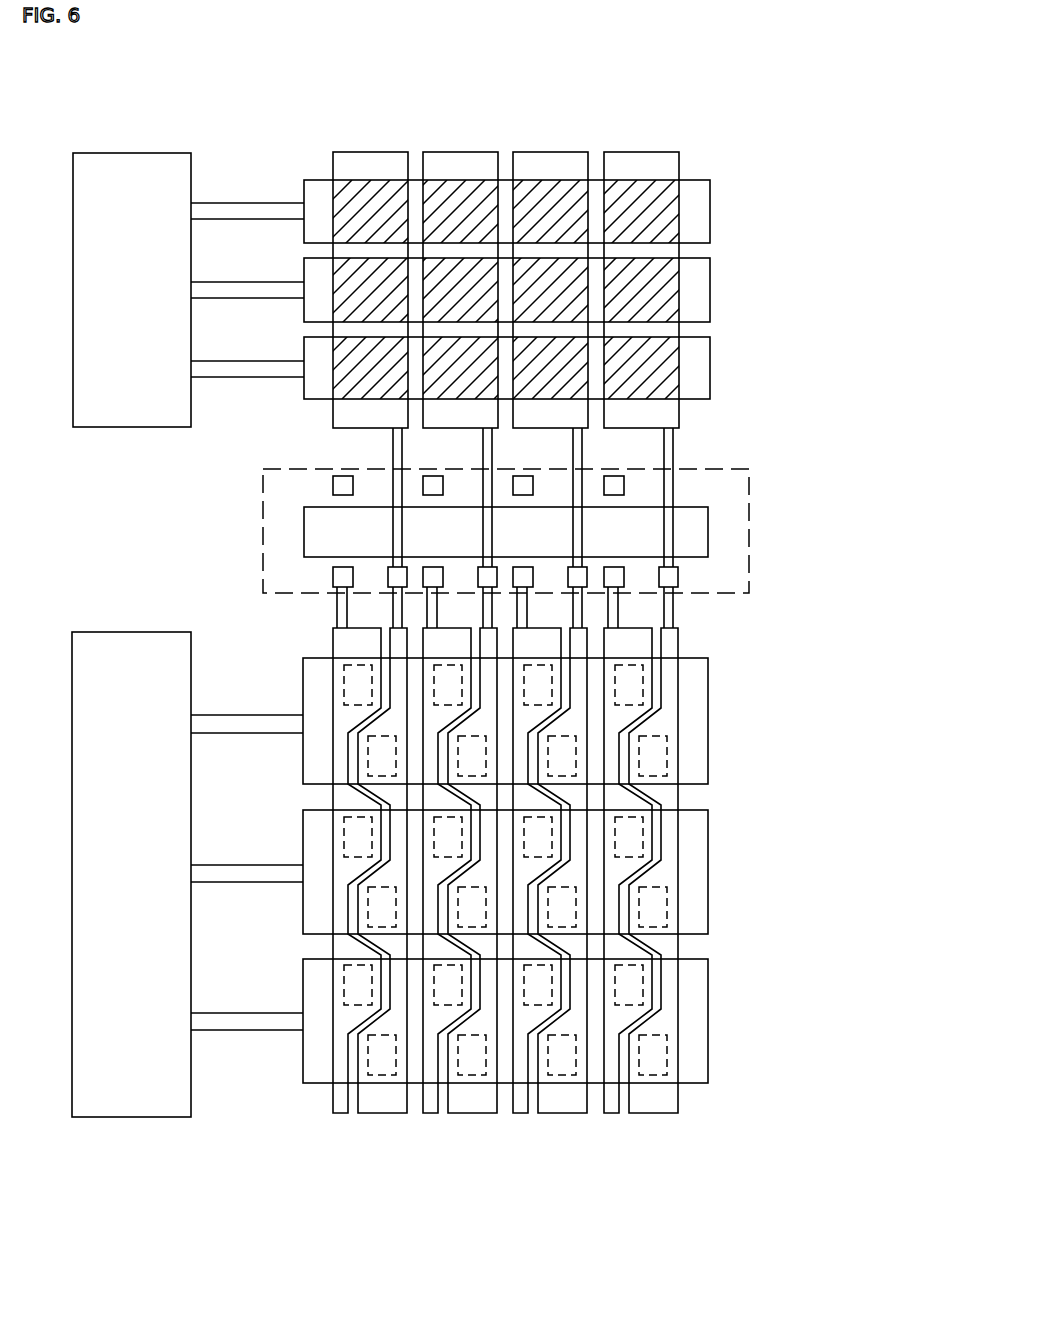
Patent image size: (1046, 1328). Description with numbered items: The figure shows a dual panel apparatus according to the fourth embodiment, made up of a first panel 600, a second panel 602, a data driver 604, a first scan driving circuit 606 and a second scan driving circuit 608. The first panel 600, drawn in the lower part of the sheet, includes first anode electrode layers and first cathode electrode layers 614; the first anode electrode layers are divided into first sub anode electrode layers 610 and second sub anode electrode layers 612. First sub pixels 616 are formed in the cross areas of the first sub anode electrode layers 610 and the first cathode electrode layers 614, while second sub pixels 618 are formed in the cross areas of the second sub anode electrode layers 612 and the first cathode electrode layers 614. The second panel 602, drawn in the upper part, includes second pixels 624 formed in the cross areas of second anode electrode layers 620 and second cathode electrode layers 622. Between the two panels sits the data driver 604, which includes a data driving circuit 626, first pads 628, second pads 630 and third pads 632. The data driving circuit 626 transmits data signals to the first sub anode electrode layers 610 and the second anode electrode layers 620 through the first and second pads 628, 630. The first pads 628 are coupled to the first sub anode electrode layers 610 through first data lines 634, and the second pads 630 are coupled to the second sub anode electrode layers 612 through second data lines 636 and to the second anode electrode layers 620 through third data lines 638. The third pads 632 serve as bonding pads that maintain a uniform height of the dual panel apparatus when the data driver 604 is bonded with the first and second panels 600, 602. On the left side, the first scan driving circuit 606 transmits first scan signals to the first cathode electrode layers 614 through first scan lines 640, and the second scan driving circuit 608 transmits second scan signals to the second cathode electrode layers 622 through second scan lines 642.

The first panel 600 is at (542, 914).
The second panel 602 is at (508, 248).
The data driver 604 is at (527, 524).
The first scan driving circuit 606 is at (127, 1117).
The second scan driving circuit 608 is at (128, 153).
The first sub anode electrode layer 610 is at (610, 1113).
The second sub anode electrode layer 612 is at (657, 1113).
The first cathode electrode layer 614 is at (723, 666).
The first sub pixel 616 is at (637, 972).
The second sub pixel 618 is at (660, 1046).
The second anode electrode layer 620 is at (668, 132).
The second cathode electrode layer 622 is at (728, 191).
The second pixel 624 is at (668, 185).
The data driving circuit 626 is at (709, 531).
The first pad 628 is at (617, 584).
The second pad 630 is at (672, 578).
The third pad 632 is at (340, 476).
The first data line 634 is at (340, 603).
The second data line 636 is at (397, 592).
The third data line 638 is at (672, 445).
The first scan line 640 is at (242, 1030).
The second scan line 642 is at (240, 203).